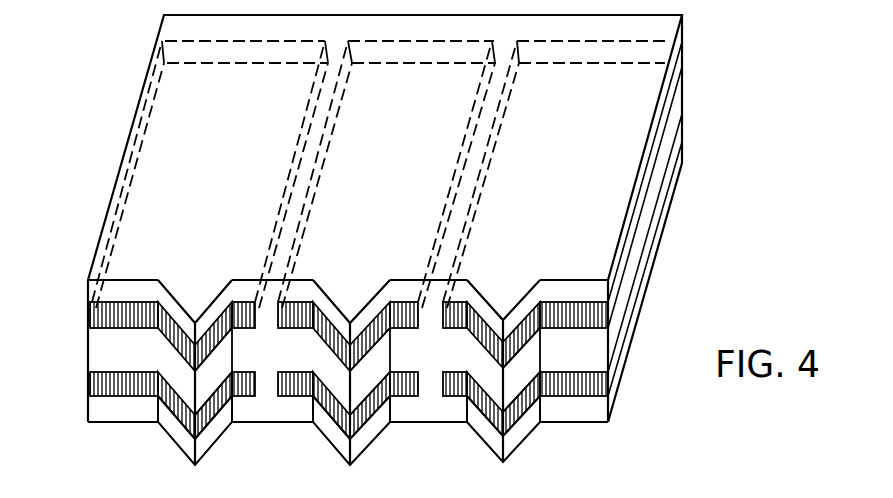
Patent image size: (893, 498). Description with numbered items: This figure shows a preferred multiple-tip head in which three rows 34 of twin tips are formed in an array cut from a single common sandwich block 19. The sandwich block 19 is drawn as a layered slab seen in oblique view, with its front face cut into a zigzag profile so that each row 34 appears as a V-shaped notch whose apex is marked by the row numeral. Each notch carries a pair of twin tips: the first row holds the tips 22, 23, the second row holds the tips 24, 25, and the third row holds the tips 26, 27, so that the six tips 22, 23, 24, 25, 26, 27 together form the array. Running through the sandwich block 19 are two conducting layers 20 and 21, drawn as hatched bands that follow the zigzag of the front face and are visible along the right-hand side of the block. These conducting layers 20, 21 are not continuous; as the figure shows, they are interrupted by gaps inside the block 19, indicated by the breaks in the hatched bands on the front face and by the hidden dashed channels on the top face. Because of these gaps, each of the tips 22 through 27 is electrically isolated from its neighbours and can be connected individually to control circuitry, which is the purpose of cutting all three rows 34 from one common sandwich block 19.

The sandwich block 19 is at (676, 231).
The conducting layer 20 is at (92, 391).
The conducting layer 21 is at (92, 317).
The tip 22 is at (198, 372).
The tip 23 is at (200, 438).
The tip 24 is at (353, 373).
The tip 25 is at (353, 440).
The tip 26 is at (506, 373).
The tip 27 is at (508, 438).
The row 34 is at (196, 318).